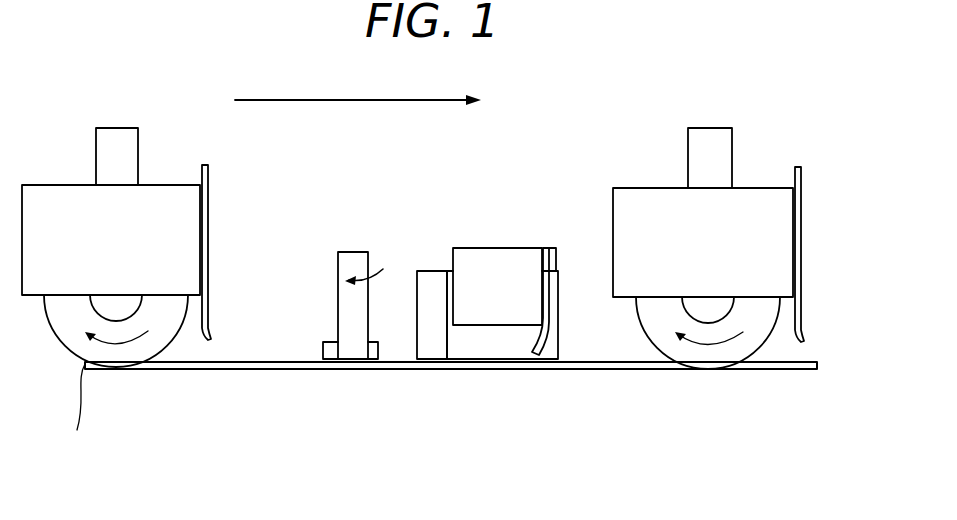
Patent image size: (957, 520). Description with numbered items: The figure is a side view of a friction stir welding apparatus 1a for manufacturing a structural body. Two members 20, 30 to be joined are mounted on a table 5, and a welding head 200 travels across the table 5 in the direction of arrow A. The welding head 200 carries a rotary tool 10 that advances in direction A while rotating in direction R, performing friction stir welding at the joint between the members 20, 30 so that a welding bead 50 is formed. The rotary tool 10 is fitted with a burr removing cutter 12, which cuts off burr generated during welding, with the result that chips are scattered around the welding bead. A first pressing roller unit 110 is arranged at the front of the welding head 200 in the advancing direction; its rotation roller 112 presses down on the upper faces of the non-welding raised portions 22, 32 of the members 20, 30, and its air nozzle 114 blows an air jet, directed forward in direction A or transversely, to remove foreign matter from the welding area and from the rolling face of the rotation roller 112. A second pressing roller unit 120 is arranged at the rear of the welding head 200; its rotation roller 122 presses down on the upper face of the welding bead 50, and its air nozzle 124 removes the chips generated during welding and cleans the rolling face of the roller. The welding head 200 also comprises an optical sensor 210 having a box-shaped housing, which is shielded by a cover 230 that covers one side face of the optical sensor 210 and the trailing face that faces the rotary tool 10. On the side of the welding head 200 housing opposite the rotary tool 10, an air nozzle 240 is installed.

The friction stir welding apparatus 1a is at (613, 108).
The table 5 is at (384, 411).
The rotary tool 10 is at (345, 293).
The burr removing cutter 12 is at (322, 344).
The member to be welded 20 is at (706, 388).
The member to be welded 30 is at (705, 392).
The non-welding raised portion 22 is at (810, 428).
The non-welding raised portion 32 is at (810, 428).
The welding bead 50 is at (237, 362).
The first pressing roller unit 110 is at (750, 205).
The rotation roller 112 is at (735, 360).
The air nozzle 114 is at (798, 236).
The second pressing roller unit 120 is at (155, 205).
The rotation roller 122 is at (117, 348).
The air nozzle 124 is at (205, 232).
The welding head 200 is at (568, 192).
The optical sensor 210 is at (500, 262).
The cover 230 is at (430, 290).
The air nozzle 240 is at (545, 353).
The advancing direction A is at (358, 87).
The rotation direction R is at (372, 272).